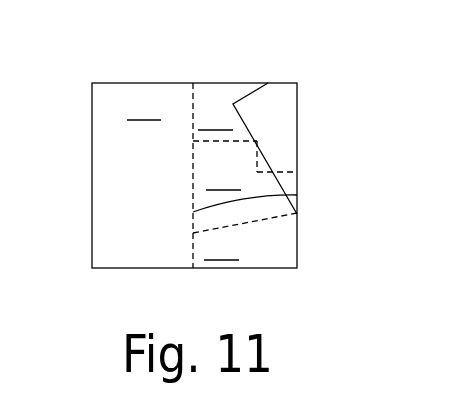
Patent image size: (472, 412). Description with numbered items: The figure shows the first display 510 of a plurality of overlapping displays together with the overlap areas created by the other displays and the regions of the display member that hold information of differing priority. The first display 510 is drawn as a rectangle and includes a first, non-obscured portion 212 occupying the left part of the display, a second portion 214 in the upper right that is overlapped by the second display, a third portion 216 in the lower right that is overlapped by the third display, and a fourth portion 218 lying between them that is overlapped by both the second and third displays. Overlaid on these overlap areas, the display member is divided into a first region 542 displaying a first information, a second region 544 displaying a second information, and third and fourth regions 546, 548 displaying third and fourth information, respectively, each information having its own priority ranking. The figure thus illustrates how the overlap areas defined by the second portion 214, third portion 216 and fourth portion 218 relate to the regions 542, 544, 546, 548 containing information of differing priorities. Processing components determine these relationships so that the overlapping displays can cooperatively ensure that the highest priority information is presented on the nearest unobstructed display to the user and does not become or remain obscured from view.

The first display 510 is at (95, 57).
The first, non-obscured portion 212 is at (112, 142).
The second portion 214 is at (281, 125).
The third portion 216 is at (257, 250).
The fourth portion 218 is at (297, 195).
The first region 542 is at (144, 110).
The second region 544 is at (225, 124).
The third region 546 is at (251, 166).
The fourth region 548 is at (221, 250).